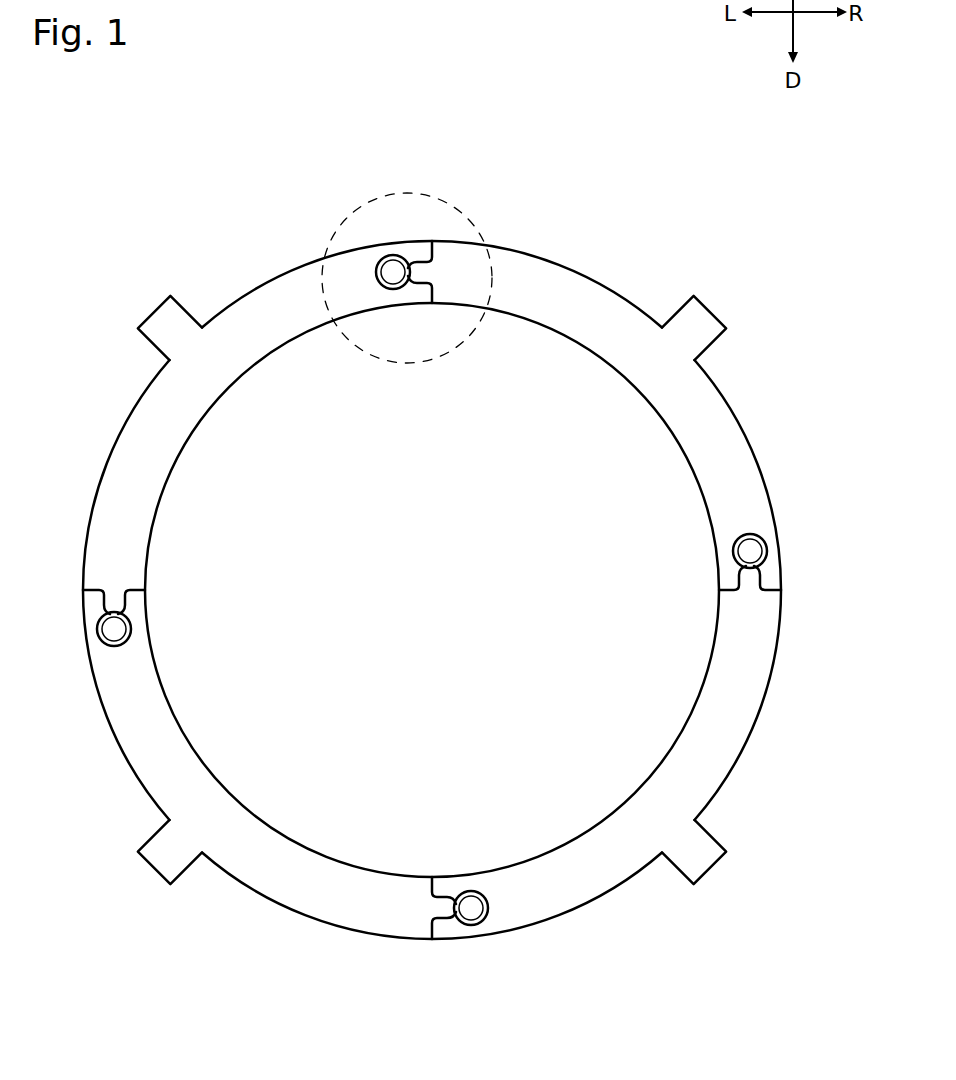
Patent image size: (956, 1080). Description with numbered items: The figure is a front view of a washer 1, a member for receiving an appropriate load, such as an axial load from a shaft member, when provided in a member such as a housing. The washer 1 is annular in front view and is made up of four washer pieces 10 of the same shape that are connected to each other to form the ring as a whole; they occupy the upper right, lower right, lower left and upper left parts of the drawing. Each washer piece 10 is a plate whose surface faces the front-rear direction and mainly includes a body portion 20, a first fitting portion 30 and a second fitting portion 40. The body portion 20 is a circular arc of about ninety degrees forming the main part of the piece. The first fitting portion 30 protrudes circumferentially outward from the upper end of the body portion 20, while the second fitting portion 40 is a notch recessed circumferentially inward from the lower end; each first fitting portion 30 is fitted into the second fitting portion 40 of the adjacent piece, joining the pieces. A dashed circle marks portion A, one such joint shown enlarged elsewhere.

The washer 1 is at (432, 552).
The washer piece 10 is at (260, 255).
The body portion 20 is at (158, 380).
The first fitting portion 30 is at (418, 262).
The second fitting portion 40 is at (418, 278).
The portion A is at (352, 208).